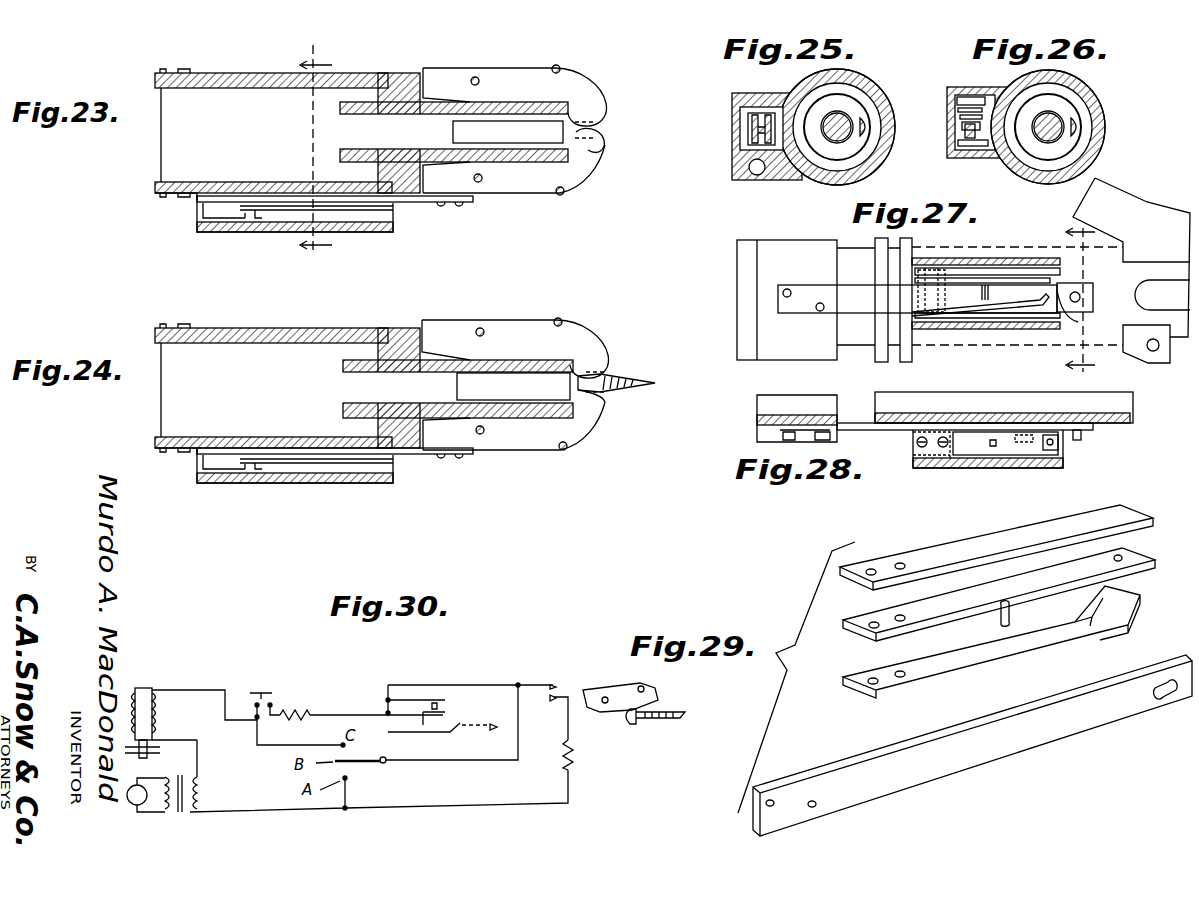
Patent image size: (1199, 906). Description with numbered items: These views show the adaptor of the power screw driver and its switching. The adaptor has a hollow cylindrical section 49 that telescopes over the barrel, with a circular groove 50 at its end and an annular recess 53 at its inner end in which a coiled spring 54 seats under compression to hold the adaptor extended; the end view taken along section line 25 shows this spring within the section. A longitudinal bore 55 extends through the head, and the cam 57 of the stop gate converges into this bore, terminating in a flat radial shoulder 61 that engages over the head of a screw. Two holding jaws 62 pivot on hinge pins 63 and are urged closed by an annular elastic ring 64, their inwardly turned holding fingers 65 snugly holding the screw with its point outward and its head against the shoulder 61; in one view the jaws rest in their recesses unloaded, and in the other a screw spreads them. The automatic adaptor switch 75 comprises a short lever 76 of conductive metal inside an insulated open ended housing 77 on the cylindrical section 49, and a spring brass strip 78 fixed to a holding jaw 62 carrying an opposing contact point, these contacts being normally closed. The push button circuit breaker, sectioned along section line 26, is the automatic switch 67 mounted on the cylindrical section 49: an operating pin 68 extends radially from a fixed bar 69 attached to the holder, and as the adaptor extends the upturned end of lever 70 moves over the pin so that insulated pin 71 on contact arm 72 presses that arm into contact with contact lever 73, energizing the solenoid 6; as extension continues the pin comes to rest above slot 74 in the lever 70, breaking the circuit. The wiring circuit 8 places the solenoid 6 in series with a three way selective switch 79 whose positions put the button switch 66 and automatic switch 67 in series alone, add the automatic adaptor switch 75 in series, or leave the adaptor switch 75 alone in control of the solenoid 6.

In FIG. 30, the solenoid 6 is at (156, 724).
In FIG. 30, the electric circuit 8 is at (210, 670).
In FIG. 23, the section line 25- 25 is at (315, 151).
In FIG. 27, the section line 26- 26 is at (1067, 299).
In FIG. 23, the cylindrical section 49 is at (235, 73).
In FIG. 24, the cylindrical section 49 is at (246, 324).
In FIG. 25, the cylindrical section 49 is at (882, 172).
In FIG. 26, the cylindrical section 49 is at (1106, 112).
In FIG. 28, the cylindrical section 49 is at (1004, 407).
In FIG. 23, the circular groove 50 is at (172, 196).
In FIG. 24, the circular groove 50 is at (174, 326).
In FIG. 27, the circular groove 50 is at (894, 362).
In FIG. 28, the circular groove 50 is at (895, 393).
In FIG. 23, the annular recess 53 is at (352, 90).
In FIG. 24, the annular recess 53 is at (358, 346).
In FIG. 25, the coiled spring 54 is at (857, 100).
In FIG. 26, the coiled spring 54 is at (1077, 147).
In FIG. 24, the longitudinal bore 55 is at (356, 384).
In FIG. 23, the cam 57 is at (528, 133).
In FIG. 24, the cam 57 is at (543, 389).
In FIG. 23, the flat radial shoulder 61 is at (572, 138).
In FIG. 24, the flat radial shoulder 61 is at (588, 388).
In FIG. 23, the holding jaws 62 is at (560, 88).
In FIG. 24, the holding jaws 62 is at (583, 342).
In FIG. 23, the hinge pins 63 is at (477, 77).
In FIG. 24, the hinge pins 63 is at (482, 328).
In FIG. 23, the annular elastic ring 64 is at (562, 196).
In FIG. 24, the annular elastic ring 64 is at (561, 318).
In FIG. 23, the holding fingers 65 is at (596, 133).
In FIG. 24, the holding fingers 65 is at (614, 378).
In FIG. 30, the button switch 66 is at (280, 700).
In FIG. 27, the automatic switch 67 is at (1083, 266).
In FIG. 28, the automatic switch 67 is at (1096, 457).
In FIG. 30, the automatic switch 67 is at (387, 701).
In FIG. 26, the operating pin 68 is at (970, 136).
In FIG. 27, the operating pin 68 is at (1082, 297).
In FIG. 28, the operating pin 68 is at (1086, 437).
In FIG. 29, the operating pin 68 is at (1165, 698).
In FIG. 26, the fixed bar 69 is at (986, 146).
In FIG. 27, the fixed bar 69 is at (853, 289).
In FIG. 28, the fixed bar 69 is at (848, 423).
In FIG. 29, the fixed bar 69 is at (1080, 724).
In FIG. 26, the lever 70 is at (962, 128).
In FIG. 27, the lever 70 is at (1040, 302).
In FIG. 29, the lever 70 is at (1040, 645).
In FIG. 27, the insulated pin 71 is at (984, 300).
In FIG. 28, the insulated pin 71 is at (982, 455).
In FIG. 29, the insulated pin 71 is at (1000, 616).
In FIG. 26, the contact arm 72 is at (960, 114).
In FIG. 27, the contact arm 72 is at (1082, 312).
In FIG. 29, the contact arm 72 is at (1143, 568).
In FIG. 26, the contact lever 73 is at (958, 102).
In FIG. 27, the contact lever 73 is at (1062, 272).
In FIG. 28, the contact lever 73 is at (1019, 450).
In FIG. 29, the contact lever 73 is at (1130, 513).
In FIG. 28, the slot 74 is at (1030, 433).
In FIG. 29, the slot 74 is at (1072, 623).
In FIG. 23, the automatic adaptor switch 75 is at (279, 212).
In FIG. 24, the automatic adaptor switch 75 is at (295, 464).
In FIG. 25, the automatic adaptor switch 75 is at (746, 115).
In FIG. 26, the automatic adaptor switch 75 is at (973, 97).
In FIG. 30, the automatic adaptor switch 75 is at (617, 693).
In FIG. 23, the short lever 76 is at (240, 219).
In FIG. 24, the short lever 76 is at (245, 470).
In FIG. 25, the short lever 76 is at (750, 140).
In FIG. 23, the housing 77 is at (352, 232).
In FIG. 24, the housing 77 is at (350, 484).
In FIG. 25, the housing 77 is at (732, 127).
In FIG. 26, the housing 77 is at (947, 152).
In FIG. 27, the housing 77 is at (992, 258).
In FIG. 28, the housing 77 is at (937, 469).
In FIG. 23, the strip 78 is at (418, 204).
In FIG. 24, the strip 78 is at (418, 456).
In FIG. 25, the strip 78 is at (766, 171).
In FIG. 30, the three way selective switch 79 is at (368, 764).